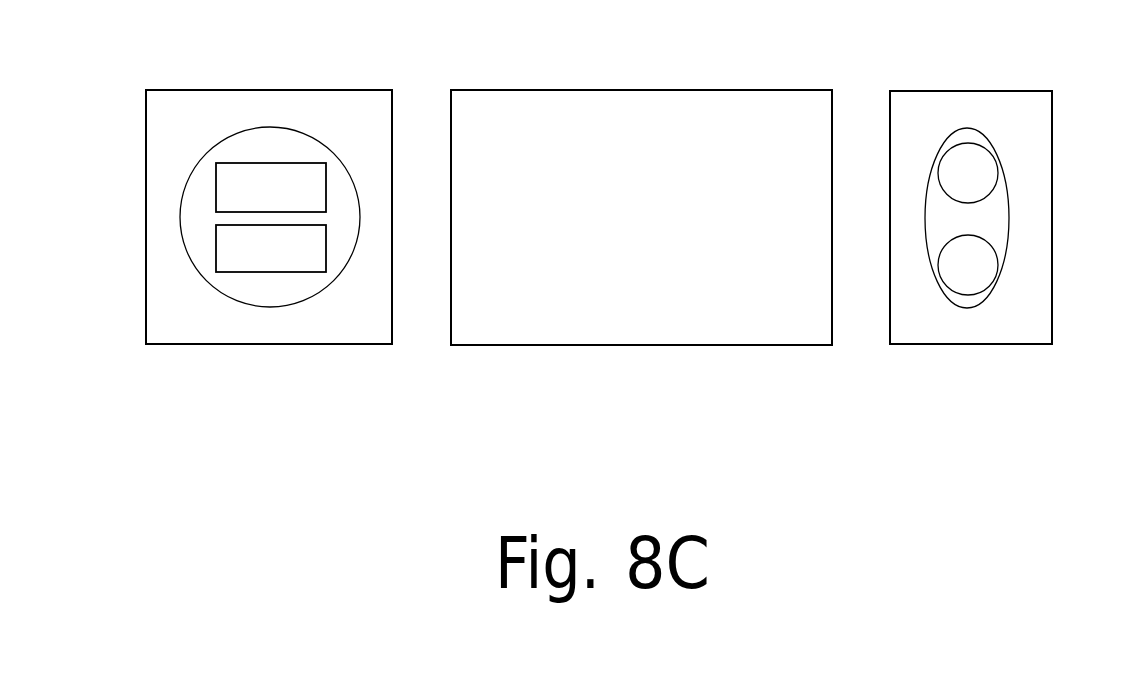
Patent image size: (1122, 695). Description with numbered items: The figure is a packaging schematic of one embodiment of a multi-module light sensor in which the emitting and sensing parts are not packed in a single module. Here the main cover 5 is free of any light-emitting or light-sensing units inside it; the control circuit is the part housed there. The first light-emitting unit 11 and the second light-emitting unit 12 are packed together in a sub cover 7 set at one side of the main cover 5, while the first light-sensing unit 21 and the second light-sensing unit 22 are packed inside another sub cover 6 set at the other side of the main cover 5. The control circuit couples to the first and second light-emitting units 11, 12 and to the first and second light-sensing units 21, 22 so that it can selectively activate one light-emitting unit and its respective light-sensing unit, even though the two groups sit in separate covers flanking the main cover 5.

The main cover 5 is at (500, 90).
The sub cover 6 is at (193, 90).
The sub cover 7 is at (940, 91).
The first light-emitting unit 11 is at (985, 148).
The second light-emitting unit 12 is at (985, 240).
The first light-sensing unit 21 is at (326, 187).
The second light-sensing unit 22 is at (326, 248).